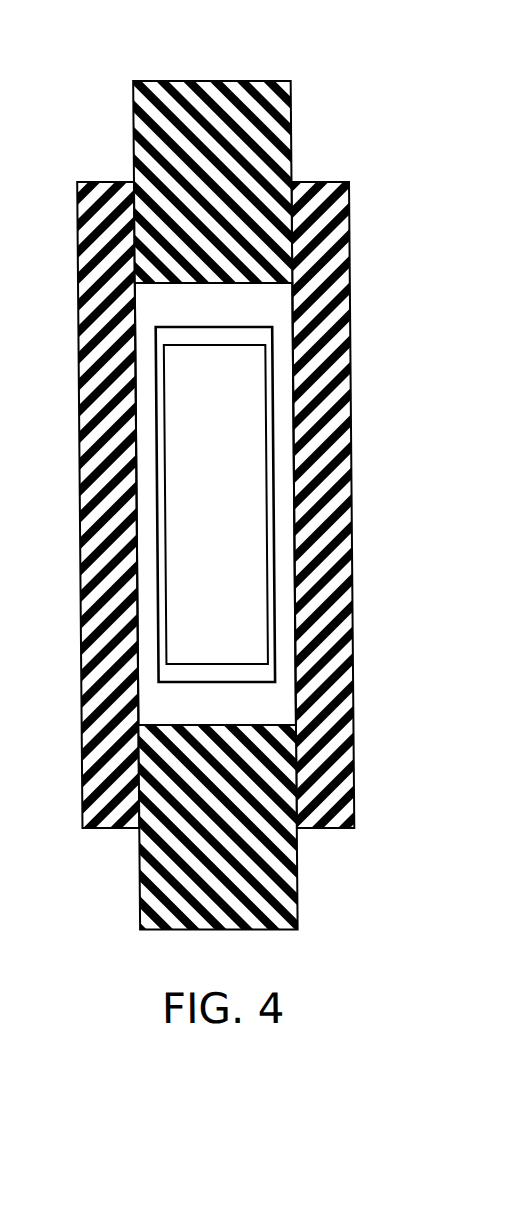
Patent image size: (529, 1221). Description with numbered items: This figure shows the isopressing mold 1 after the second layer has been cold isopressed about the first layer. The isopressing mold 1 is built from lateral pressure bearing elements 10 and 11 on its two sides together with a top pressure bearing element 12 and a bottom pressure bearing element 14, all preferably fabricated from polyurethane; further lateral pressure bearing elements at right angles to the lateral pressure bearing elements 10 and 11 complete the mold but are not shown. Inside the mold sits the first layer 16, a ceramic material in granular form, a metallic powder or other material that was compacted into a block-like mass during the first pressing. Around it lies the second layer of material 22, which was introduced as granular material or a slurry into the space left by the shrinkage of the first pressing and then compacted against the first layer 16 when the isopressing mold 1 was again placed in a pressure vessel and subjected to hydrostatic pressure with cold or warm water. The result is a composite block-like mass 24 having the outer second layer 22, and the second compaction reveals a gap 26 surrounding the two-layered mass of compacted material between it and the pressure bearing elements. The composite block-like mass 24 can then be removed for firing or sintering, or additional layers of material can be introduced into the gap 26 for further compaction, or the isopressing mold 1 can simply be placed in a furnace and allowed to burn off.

The isopressing mold 1 is at (341, 124).
The lateral pressure bearing element 10 is at (107, 688).
The lateral pressure bearing element 11 is at (325, 562).
The top pressure bearing element 12 is at (199, 117).
The bottom pressure bearing element 14 is at (170, 895).
The first layer 16 is at (228, 430).
The second layer of material 22 is at (156, 493).
The composite block-like mass 24 is at (249, 316).
The gap 26 is at (178, 303).